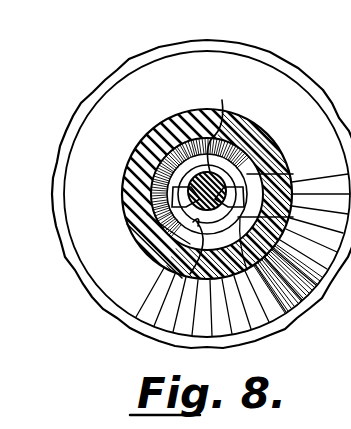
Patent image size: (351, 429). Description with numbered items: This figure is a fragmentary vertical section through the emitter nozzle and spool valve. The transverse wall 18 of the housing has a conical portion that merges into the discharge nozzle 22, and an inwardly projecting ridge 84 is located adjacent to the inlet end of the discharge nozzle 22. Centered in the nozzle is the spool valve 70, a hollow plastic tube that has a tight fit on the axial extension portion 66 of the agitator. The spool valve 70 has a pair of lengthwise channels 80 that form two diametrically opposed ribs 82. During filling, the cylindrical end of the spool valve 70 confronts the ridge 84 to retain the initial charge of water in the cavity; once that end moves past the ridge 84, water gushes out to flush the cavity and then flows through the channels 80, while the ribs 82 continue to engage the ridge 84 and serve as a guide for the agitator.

The transverse wall 18 is at (287, 62).
The discharge nozzle 22 is at (254, 128).
The channels 80 is at (143, 264).
The ribs 82 is at (266, 174).
The inwardly projecting ridge 84 is at (190, 276).
The axial extension portion 66 is at (242, 255).
The spool valve 70 is at (289, 268).